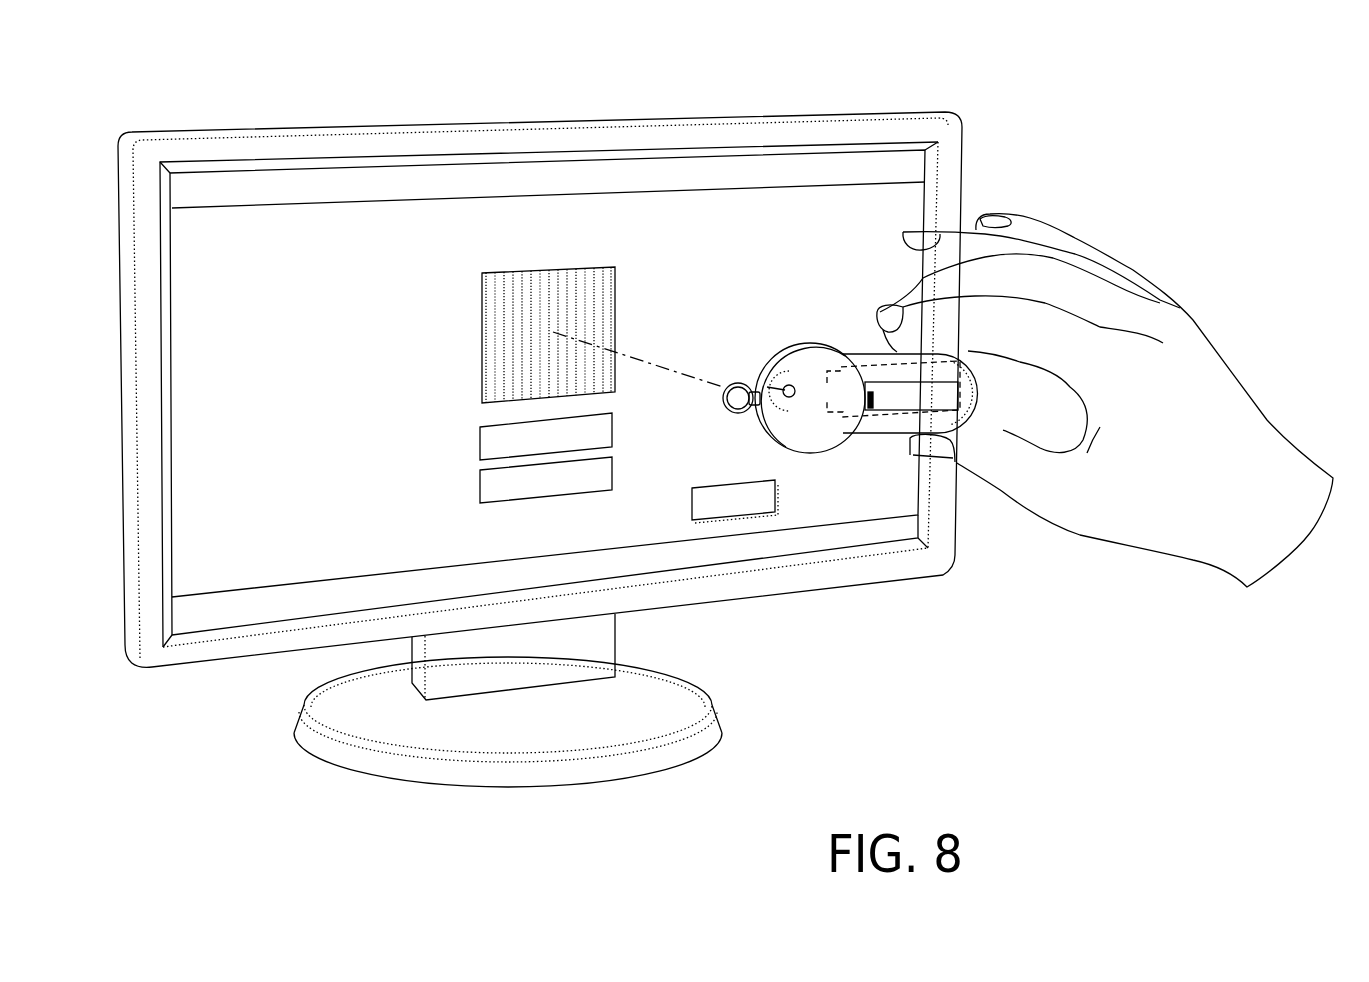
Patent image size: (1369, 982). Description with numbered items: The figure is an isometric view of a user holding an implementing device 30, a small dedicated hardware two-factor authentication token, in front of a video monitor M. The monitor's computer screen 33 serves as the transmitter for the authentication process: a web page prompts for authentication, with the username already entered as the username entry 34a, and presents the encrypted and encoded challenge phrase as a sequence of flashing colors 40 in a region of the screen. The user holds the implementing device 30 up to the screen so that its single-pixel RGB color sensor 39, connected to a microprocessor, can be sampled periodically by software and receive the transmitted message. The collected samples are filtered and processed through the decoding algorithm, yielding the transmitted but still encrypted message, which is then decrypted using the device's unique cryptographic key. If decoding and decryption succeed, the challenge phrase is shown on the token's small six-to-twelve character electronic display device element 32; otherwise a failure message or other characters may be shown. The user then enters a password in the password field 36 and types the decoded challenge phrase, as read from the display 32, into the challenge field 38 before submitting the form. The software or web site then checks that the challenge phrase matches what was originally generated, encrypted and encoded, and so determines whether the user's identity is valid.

The monitor M is at (787, 121).
The computer screen 33 is at (193, 502).
The username entry 34a is at (538, 242).
The sequence of flashing colors 40 is at (593, 292).
The password field 36 is at (598, 435).
The challenge field 38 is at (598, 475).
The implementing device 30 is at (825, 442).
The single-pixel RGB color sensor 39 is at (790, 383).
The electronic display device element 32 is at (940, 398).